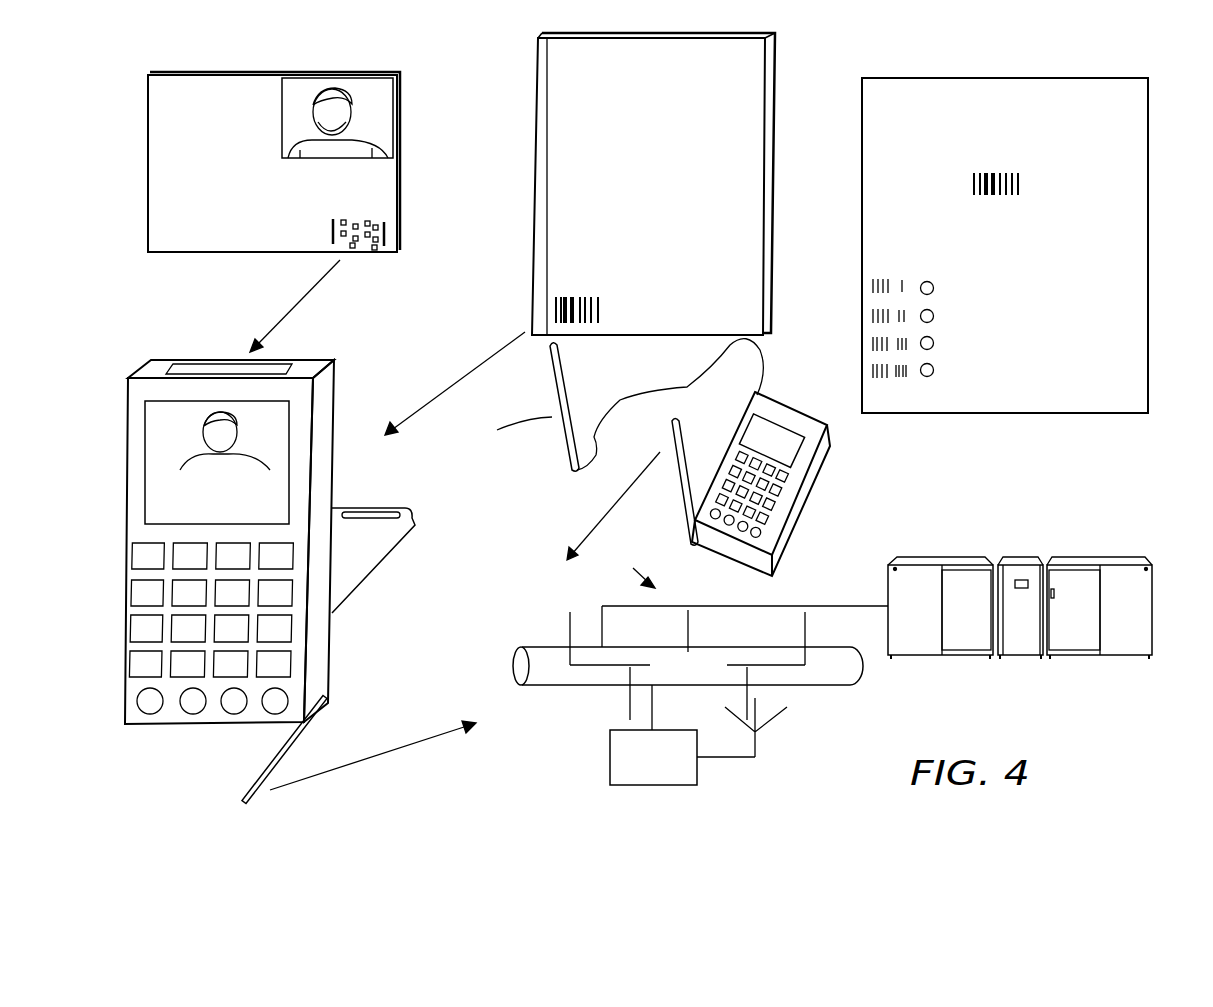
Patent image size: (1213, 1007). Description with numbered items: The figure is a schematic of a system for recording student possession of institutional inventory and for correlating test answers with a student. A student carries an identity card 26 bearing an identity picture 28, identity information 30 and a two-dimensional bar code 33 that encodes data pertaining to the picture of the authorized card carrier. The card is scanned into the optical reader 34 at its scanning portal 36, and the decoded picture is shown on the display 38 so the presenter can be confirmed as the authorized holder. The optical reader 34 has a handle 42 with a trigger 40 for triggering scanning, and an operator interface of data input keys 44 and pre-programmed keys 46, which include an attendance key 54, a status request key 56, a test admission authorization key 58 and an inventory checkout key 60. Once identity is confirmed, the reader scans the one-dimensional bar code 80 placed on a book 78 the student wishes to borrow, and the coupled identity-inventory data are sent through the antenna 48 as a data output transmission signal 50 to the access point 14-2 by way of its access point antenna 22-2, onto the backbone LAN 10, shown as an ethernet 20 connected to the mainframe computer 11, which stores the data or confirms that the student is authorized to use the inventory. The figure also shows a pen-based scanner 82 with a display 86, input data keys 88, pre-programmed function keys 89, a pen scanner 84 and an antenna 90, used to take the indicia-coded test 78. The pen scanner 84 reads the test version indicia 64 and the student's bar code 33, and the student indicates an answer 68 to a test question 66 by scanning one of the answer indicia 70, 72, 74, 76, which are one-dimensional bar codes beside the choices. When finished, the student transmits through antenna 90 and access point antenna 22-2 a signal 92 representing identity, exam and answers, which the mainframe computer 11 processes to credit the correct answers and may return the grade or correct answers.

The backbone LAN 10 is at (832, 674).
The mainframe computer 11 is at (1005, 655).
The access point 14-2 is at (612, 730).
The ethernet 20 is at (567, 642).
The access point antenna 22-2 is at (745, 760).
The identity card 26 is at (388, 116).
The identity picture 28 is at (316, 190).
The identity information 30 is at (265, 250).
The two-dimensional bar code 33 is at (388, 230).
The optical reader 34 is at (271, 563).
The scanning portal 36 is at (274, 358).
The display 38 is at (287, 492).
The trigger 40 is at (372, 518).
The handle 42 is at (347, 560).
The data input keys 44 is at (211, 610).
The pre-programmed keys 46 is at (315, 690).
The antenna 48 is at (300, 733).
The data output transmission signal 50 is at (425, 741).
The attendance key 54 is at (153, 715).
The status request key 56 is at (196, 715).
The test admission authorization key 58 is at (237, 715).
The inventory checkout key 60 is at (278, 715).
The test version indicia 64 is at (948, 175).
The test question 66 is at (903, 248).
The answer 68 is at (995, 285).
The answer indicia 70 is at (861, 280).
The answer indicia 72 is at (861, 309).
The answer indicia 74 is at (861, 338).
The answer indicia 76 is at (861, 366).
The book 78 is at (629, 184).
The one-dimensional bar code 80 is at (542, 298).
The pen-based scanner 82 is at (786, 484).
The pen scanner 84 is at (555, 430).
The display 86 is at (810, 450).
The input data keys 88 is at (794, 508).
The pre-programmed function keys 89 is at (781, 543).
The antenna 90 is at (673, 425).
The signal 92 is at (628, 490).